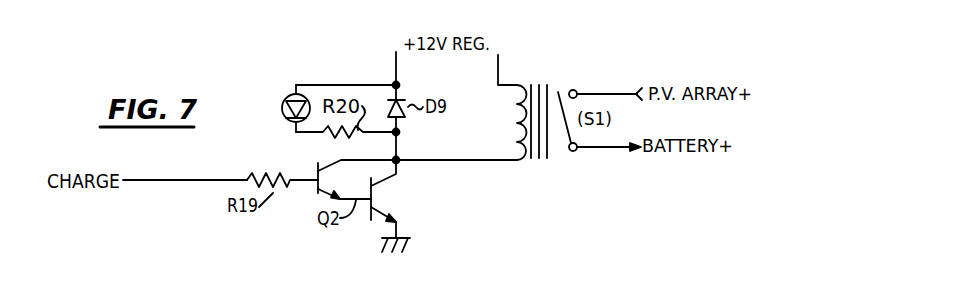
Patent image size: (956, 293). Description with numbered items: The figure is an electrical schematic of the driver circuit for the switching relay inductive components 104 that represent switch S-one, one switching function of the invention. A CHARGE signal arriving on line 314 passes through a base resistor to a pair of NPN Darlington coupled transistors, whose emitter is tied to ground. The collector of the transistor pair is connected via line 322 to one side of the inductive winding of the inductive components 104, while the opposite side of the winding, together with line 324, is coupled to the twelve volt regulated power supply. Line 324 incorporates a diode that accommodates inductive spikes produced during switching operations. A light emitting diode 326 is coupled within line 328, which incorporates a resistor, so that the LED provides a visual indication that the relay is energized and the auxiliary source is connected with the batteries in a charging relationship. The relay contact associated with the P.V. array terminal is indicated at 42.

The line 314 is at (174, 180).
The light emitting diode 326 is at (283, 98).
The line 328 is at (355, 85).
The line 324 is at (400, 70).
The line 322 is at (447, 160).
The inductive components 104 is at (577, 31).
The relay switch contact to P.V. array 42 is at (609, 93).